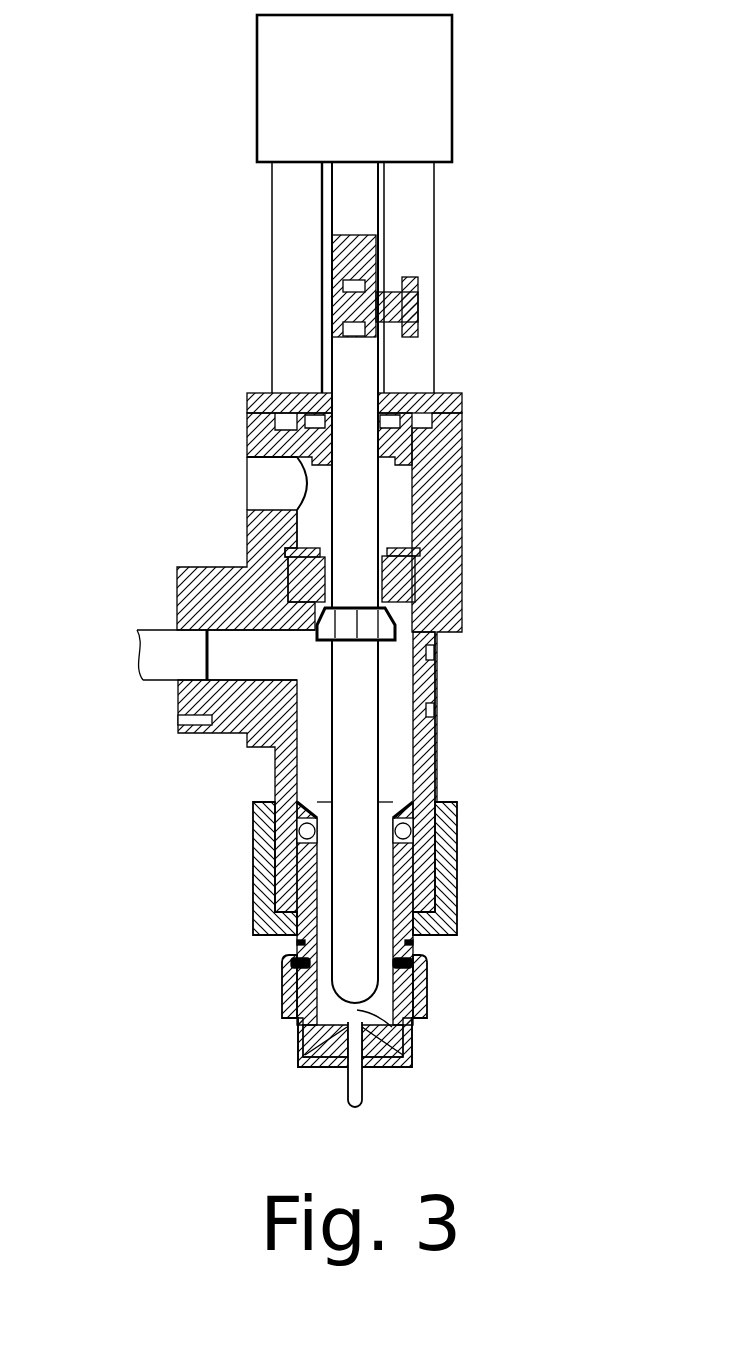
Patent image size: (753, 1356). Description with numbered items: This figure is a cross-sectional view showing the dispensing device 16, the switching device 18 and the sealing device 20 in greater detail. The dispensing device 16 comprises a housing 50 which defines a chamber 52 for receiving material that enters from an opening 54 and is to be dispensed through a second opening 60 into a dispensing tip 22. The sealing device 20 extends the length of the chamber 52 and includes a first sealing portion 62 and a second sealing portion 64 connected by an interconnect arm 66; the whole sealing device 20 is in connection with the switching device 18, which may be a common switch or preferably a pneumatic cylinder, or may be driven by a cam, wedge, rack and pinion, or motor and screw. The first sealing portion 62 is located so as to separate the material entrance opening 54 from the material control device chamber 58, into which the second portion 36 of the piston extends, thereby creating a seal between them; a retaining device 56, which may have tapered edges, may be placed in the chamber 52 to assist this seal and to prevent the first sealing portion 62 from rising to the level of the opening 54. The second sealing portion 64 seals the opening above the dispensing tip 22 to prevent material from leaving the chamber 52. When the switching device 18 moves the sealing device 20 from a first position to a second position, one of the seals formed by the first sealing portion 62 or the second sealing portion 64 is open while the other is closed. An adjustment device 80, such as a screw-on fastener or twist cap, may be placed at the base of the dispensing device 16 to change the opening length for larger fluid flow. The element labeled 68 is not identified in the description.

The dispensing device 16 is at (568, 427).
The switching device 18 is at (487, 130).
The sealing device 20 is at (395, 732).
The dispensing tip 22 is at (378, 1098).
The second portion of the piston 36 is at (168, 665).
The housing 50 is at (463, 527).
The chamber 52 is at (310, 790).
The opening 54 is at (272, 497).
The retaining device 56 is at (410, 577).
The material control device chamber 58 is at (248, 658).
The second opening 60 is at (302, 1050).
The first sealing portion 62 is at (293, 610).
The second sealing portion 64 is at (410, 1033).
The interconnect arm 66 is at (372, 783).
The piston collar 68 is at (363, 378).
The adjustment device 80 is at (457, 895).